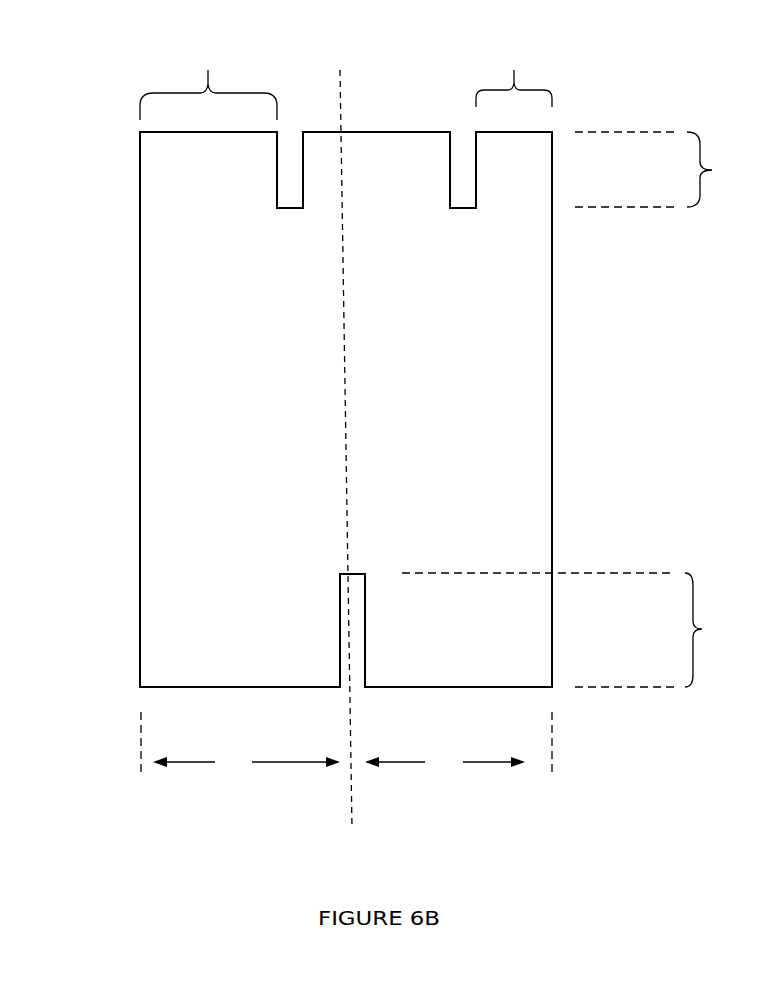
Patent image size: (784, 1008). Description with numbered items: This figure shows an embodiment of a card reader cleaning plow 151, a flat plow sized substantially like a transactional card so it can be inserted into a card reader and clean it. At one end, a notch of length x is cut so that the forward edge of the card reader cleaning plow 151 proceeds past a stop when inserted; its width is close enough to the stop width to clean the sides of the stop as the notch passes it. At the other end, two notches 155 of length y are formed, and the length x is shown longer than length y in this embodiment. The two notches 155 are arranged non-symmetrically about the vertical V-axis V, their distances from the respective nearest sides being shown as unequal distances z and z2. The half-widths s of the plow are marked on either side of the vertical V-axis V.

The panel body 151 is at (153, 461).
The notches 155 is at (463, 131).
The vertical axis V is at (373, 460).
The left edge-to-notch width z is at (208, 80).
The notch-to-right-edge width z' z2 is at (514, 71).
The notch depth y is at (668, 169).
The bottom protrusion height x is at (582, 630).
The half-width s is at (346, 744).